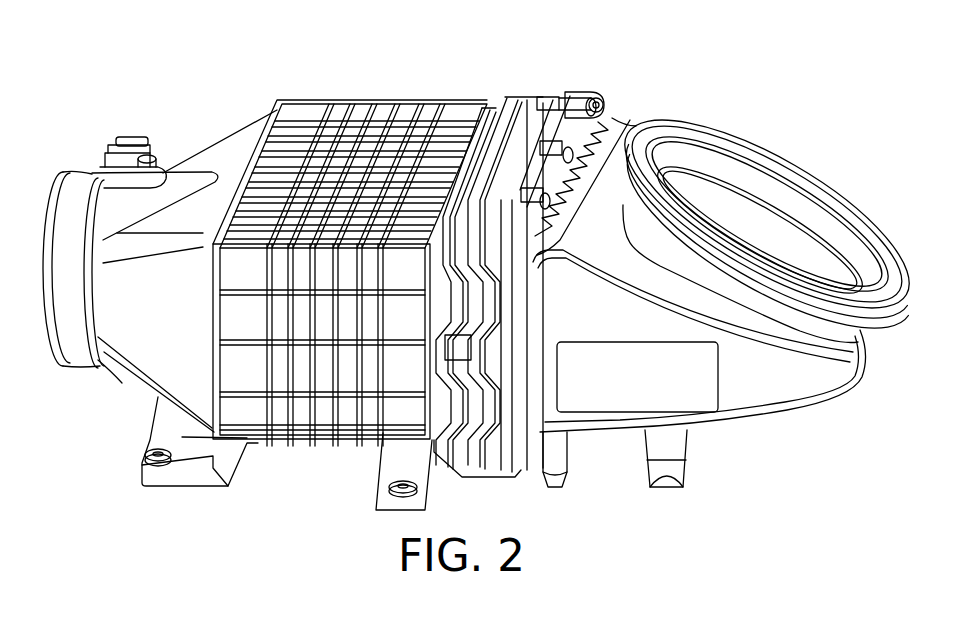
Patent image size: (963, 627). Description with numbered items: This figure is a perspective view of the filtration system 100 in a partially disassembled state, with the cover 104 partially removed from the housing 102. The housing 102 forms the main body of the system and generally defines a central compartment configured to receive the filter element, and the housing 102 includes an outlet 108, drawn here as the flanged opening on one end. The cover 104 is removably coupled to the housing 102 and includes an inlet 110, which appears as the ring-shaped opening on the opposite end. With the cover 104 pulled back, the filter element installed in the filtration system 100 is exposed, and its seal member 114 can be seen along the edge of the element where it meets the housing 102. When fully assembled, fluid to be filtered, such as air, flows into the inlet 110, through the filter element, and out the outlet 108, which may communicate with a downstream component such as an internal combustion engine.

The filtration system 100 is at (83, 86).
The housing 102 is at (153, 352).
The cover 104 is at (805, 393).
The outlet 108 is at (77, 203).
The inlet 110 is at (788, 215).
The seal member 114 is at (548, 100).